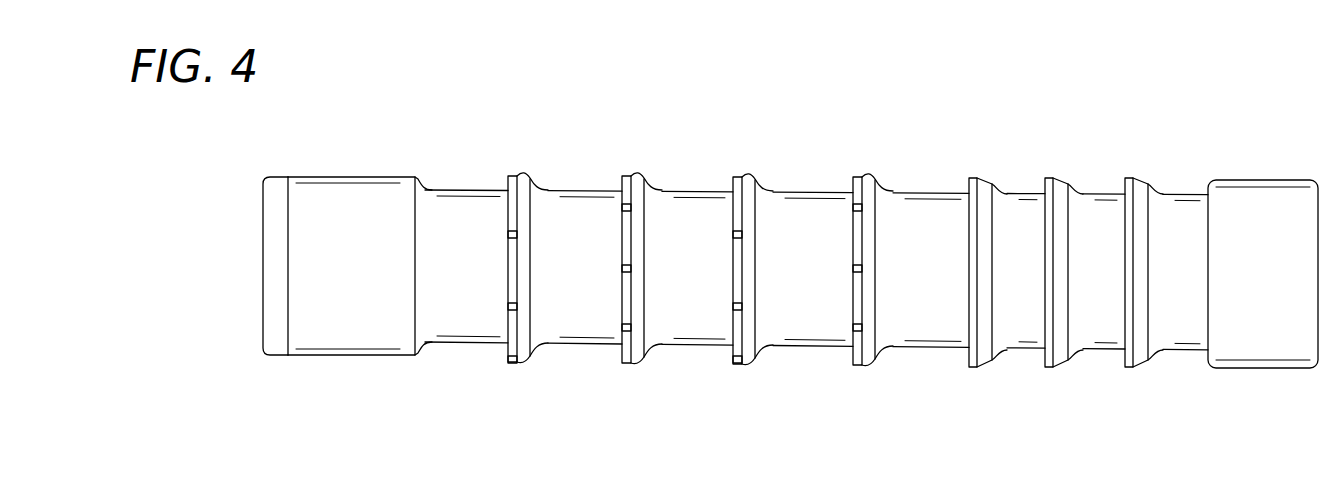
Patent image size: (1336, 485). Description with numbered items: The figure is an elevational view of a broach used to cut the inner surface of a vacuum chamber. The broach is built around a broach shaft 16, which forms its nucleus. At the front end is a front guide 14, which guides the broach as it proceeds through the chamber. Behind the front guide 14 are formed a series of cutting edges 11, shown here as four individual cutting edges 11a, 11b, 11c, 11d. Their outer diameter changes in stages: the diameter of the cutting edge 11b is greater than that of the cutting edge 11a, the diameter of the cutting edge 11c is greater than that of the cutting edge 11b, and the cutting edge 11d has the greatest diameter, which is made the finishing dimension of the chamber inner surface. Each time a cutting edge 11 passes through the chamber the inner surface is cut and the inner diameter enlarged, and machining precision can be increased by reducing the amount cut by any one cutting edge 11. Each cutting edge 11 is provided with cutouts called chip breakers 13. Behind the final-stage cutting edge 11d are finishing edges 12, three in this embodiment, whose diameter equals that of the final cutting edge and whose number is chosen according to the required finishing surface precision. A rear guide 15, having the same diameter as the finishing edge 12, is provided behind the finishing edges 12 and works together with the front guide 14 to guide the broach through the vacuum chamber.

The cutting edge 11 is at (715, 324).
The cutting edge 11a is at (521, 362).
The cutting edge 11b is at (635, 363).
The cutting edge 11c is at (746, 364).
The cutting edge 11d is at (887, 298).
The finishing edge 12 is at (978, 180).
The chip breaker 13 is at (512, 359).
The front guide 14 is at (378, 196).
The rear guide 15 is at (1266, 202).
The broach shaft 16 is at (940, 295).